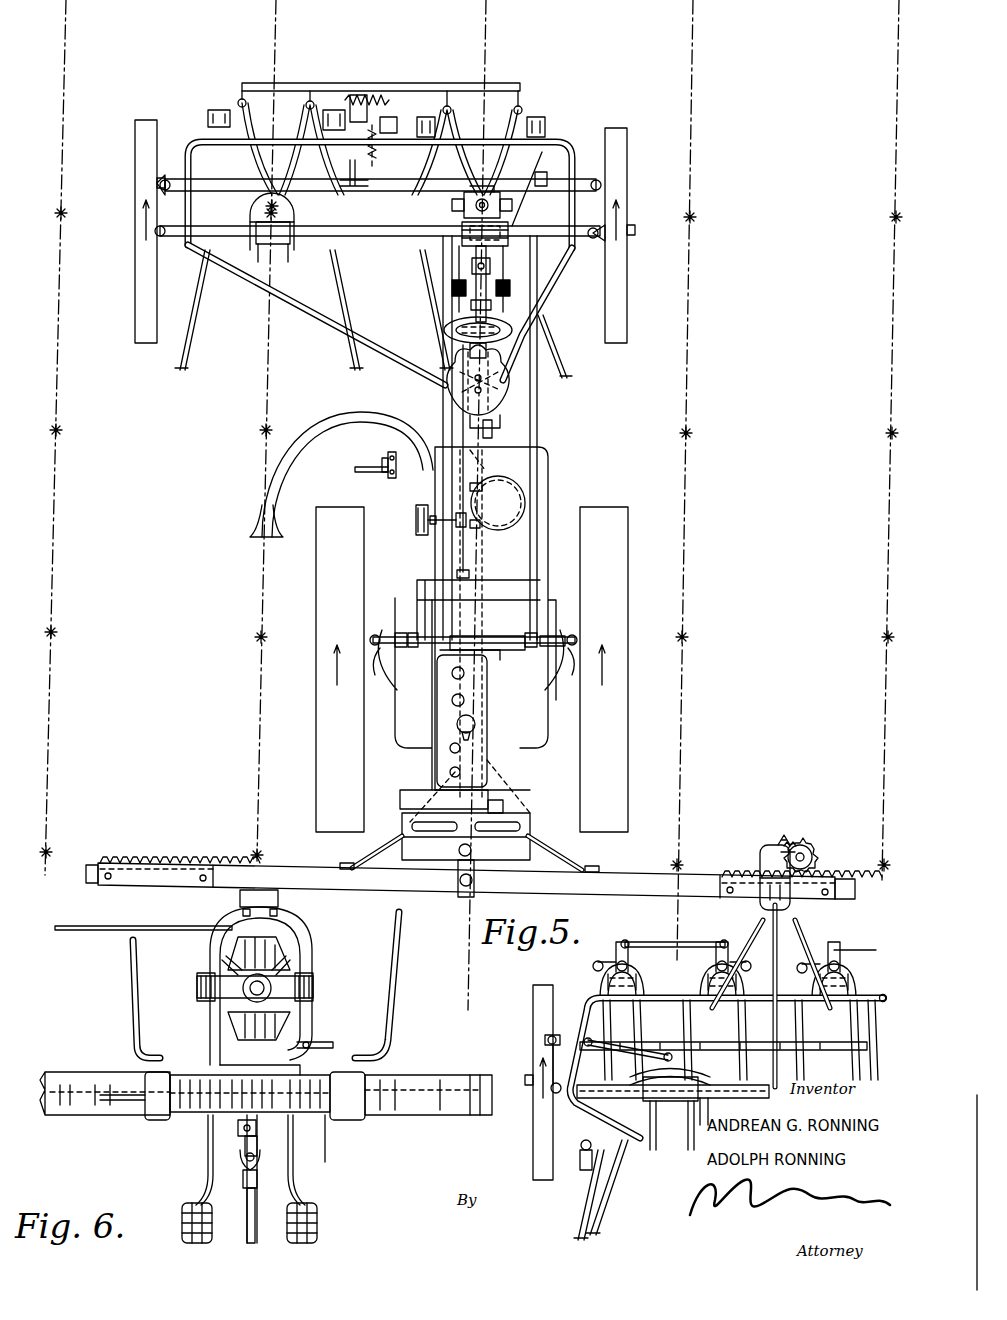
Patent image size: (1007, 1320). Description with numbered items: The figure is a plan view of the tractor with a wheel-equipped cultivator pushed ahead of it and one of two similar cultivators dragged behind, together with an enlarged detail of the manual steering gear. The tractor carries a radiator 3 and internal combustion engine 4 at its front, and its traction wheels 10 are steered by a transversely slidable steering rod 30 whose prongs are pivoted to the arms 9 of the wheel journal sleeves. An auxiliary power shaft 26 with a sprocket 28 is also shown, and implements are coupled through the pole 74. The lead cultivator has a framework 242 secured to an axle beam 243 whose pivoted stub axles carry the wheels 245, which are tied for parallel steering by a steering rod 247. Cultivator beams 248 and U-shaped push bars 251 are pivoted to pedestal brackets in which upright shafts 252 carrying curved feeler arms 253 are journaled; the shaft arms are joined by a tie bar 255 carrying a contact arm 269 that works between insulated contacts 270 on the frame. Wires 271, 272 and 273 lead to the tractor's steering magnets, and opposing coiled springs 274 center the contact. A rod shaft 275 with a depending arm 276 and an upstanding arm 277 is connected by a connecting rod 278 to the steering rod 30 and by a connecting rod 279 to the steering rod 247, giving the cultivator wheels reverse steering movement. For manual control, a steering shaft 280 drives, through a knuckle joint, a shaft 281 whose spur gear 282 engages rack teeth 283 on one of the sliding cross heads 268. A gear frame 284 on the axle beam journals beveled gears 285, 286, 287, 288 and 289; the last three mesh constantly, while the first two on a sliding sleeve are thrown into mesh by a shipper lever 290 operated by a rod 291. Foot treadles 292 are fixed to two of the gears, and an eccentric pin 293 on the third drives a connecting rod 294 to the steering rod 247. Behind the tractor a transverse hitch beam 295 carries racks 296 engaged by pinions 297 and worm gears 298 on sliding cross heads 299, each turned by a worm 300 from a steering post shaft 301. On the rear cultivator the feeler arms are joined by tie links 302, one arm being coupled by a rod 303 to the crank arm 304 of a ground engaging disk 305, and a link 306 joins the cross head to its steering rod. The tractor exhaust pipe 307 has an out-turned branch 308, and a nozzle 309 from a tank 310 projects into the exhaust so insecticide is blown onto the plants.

In FIG. 5, the radiator 3 is at (515, 851).
In FIG. 5, the internal combustion engine 4 is at (445, 720).
In FIG. 5, the inwardly projecting arms 9 is at (378, 642).
In FIG. 5, the wheel 10 is at (472, 669).
In FIG. 5, the auxiliary power shaft 26 is at (380, 466).
In FIG. 5, the sprocket 28 is at (396, 478).
In FIG. 5, the steering rod 30 is at (415, 647).
In FIG. 5, the pole 74 is at (492, 118).
In FIG. 5, the framework 242 is at (326, 318).
In FIG. 5, the axle beam 243 is at (592, 1095).
In FIG. 6, the axle beam 243 is at (443, 1088).
In FIG. 5, the wheels 245 is at (134, 318).
In FIG. 5, the steering rod 247 is at (180, 177).
In FIG. 5, the cultivator beams 248 is at (203, 336).
In FIG. 5, the push bars 251 is at (238, 170).
In FIG. 6, the push bars 251 is at (128, 990).
In FIG. 5, the upright shafts 252 is at (238, 102).
In FIG. 5, the feeler arms 253 is at (283, 125).
In FIG. 5, the tie bar 255 is at (298, 83).
In FIG. 5, the cross heads 268 is at (276, 246).
In FIG. 6, the cross heads 268 is at (118, 1118).
In FIG. 5, the contact arm 269 is at (392, 104).
In FIG. 5, the insulated contacts 270 is at (398, 124).
In FIG. 5, the wire 271 is at (375, 180).
In FIG. 5, the wire 272 is at (380, 158).
In FIG. 5, the wire 273 is at (365, 232).
In FIG. 5, the coiled springs 274 is at (370, 98).
In FIG. 5, the rod shaft 275 is at (540, 405).
In FIG. 5, the depending arm 276 is at (492, 660).
In FIG. 5, the upstanding arm 277 is at (545, 160).
In FIG. 5, the connecting rod 278 is at (512, 655).
In FIG. 5, the connecting rod 279 is at (578, 186).
In FIG. 5, the steering shaft 280 is at (488, 292).
In FIG. 6, the steering shaft 280 is at (245, 1208).
In FIG. 6, the shaft 281 is at (236, 1128).
In FIG. 6, the spur gear 282 is at (272, 1115).
In FIG. 6, the rack teeth 283 is at (378, 1080).
In FIG. 5, the gear frame 284 is at (500, 204).
In FIG. 6, the gear frame 284 is at (302, 966).
In FIG. 6, the beveled gear 285 is at (232, 1032).
In FIG. 6, the beveled gear 286 is at (272, 946).
In FIG. 6, the beveled gear 287 is at (226, 968).
In FIG. 6, the beveled gear 288 is at (286, 968).
In FIG. 6, the beveled gear 289 is at (200, 976).
In FIG. 6, the shipper lever 290 is at (312, 1043).
In FIG. 6, the rod 291 is at (330, 1150).
In FIG. 5, the foot treadles 292 is at (452, 268).
In FIG. 6, the foot treadles 292 is at (206, 1170).
In FIG. 6, the eccentric pin 293 is at (278, 908).
In FIG. 6, the connecting rod 294 is at (150, 926).
In FIG. 5, the hitch beam 295 is at (655, 887).
In FIG. 5, the racks 296 is at (136, 858).
In FIG. 5, the pinions 297 is at (813, 859).
In FIG. 5, the worm gears 298 is at (800, 848).
In FIG. 5, the cross heads 299 is at (770, 858).
In FIG. 5, the worm 300 is at (784, 842).
In FIG. 5, the steering post shaft 301 is at (779, 945).
In FIG. 5, the tie links 302 is at (686, 942).
In FIG. 5, the rod 303 is at (598, 1062).
In FIG. 5, the crank arm 304 is at (595, 1160).
In FIG. 5, the ground engaging disk 305 is at (586, 1150).
In FIG. 5, the link 306 is at (664, 1048).
In FIG. 5, the exhaust pipe 307 is at (430, 553).
In FIG. 5, the branch 308 is at (275, 490).
In FIG. 5, the nozzle 309 is at (416, 518).
In FIG. 5, the tank 310 is at (508, 497).